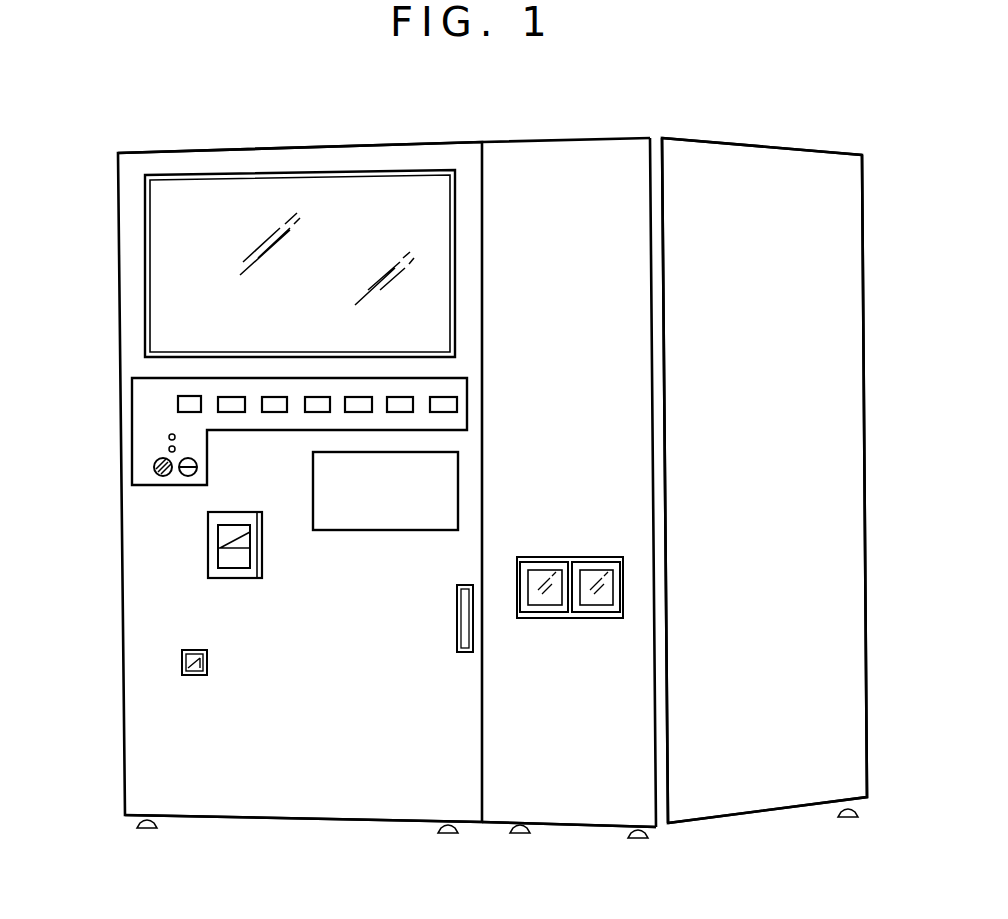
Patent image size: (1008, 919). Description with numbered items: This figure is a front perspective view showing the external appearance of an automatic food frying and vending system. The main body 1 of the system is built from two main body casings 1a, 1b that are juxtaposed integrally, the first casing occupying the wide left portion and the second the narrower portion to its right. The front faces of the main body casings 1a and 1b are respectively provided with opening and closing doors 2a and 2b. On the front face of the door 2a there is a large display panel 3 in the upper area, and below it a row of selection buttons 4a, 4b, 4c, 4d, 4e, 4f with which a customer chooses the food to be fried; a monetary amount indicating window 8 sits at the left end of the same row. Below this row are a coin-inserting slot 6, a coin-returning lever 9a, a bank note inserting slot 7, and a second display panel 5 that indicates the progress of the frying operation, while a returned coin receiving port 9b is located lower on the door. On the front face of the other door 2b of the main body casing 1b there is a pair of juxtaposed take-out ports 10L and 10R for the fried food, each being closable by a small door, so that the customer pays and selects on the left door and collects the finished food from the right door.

The main body 1 is at (542, 140).
The main body casing 1a is at (297, 148).
The main body casing 1b is at (734, 145).
The opening and closing door 2a is at (343, 807).
The opening and closing door 2b is at (592, 812).
The display panel 3 is at (160, 255).
The selection button 4a is at (230, 397).
The selection button 4b is at (276, 397).
The selection button 4c is at (316, 397).
The selection button 4d is at (356, 397).
The selection button 4e is at (400, 397).
The selection button 4f is at (457, 402).
The display panel 5 is at (400, 522).
The coin-inserting slot 6 is at (188, 478).
The bank note inserting slot 7 is at (245, 547).
The monetary amount indicating window 8 is at (178, 404).
The coin-returning lever 9a is at (154, 468).
The returned coin receiving port 9b is at (195, 677).
The take-out port 10L is at (545, 606).
The take-out port 10R is at (600, 606).